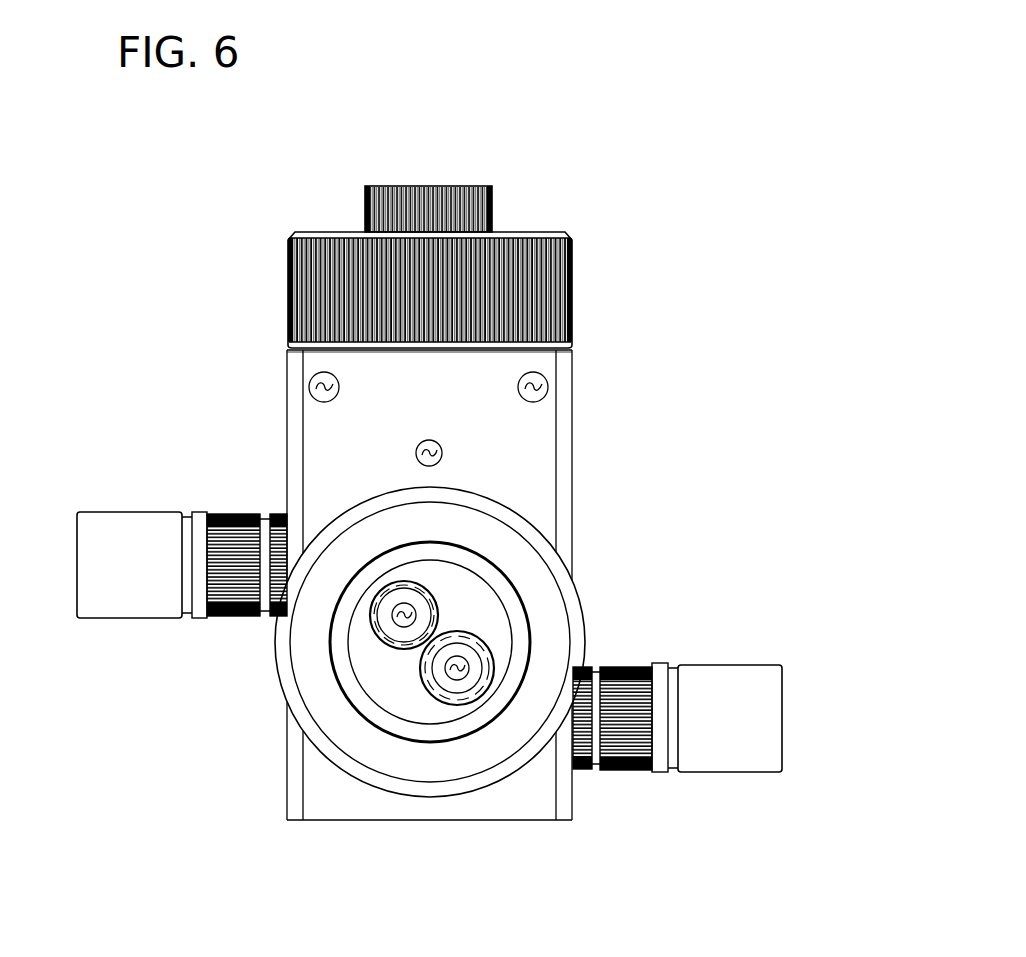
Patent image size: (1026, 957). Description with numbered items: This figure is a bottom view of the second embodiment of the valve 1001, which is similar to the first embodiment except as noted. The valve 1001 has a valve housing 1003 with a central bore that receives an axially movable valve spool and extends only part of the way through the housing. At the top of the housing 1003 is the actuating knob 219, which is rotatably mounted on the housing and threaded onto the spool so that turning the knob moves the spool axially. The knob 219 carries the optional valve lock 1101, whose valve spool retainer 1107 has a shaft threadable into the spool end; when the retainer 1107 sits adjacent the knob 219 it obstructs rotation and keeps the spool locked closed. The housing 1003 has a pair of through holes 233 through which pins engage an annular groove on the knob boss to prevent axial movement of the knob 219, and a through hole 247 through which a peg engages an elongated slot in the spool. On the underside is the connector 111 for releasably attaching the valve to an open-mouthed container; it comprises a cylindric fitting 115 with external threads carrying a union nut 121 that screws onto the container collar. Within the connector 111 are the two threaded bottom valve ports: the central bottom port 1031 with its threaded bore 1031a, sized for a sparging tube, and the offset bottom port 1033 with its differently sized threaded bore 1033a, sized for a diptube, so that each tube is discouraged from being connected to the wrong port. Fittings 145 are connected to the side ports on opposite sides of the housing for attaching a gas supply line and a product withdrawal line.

The valve 1001 is at (634, 242).
The valve housing 1003 is at (303, 461).
The actuating knob 219 is at (290, 240).
The valve lock 1101 is at (454, 182).
The valve spool retainer 1107 is at (398, 193).
The through holes 233 is at (309, 384).
The through hole 247 is at (440, 447).
The connector 111 is at (587, 590).
The union nut 121 is at (327, 727).
The cylindric fitting 115 is at (395, 698).
The central bottom port 1031 is at (398, 628).
The threaded bore 1031a is at (370, 613).
The offset bottom port 1033 is at (457, 668).
The threaded bore 1033a is at (490, 653).
The fittings 145 is at (100, 613).